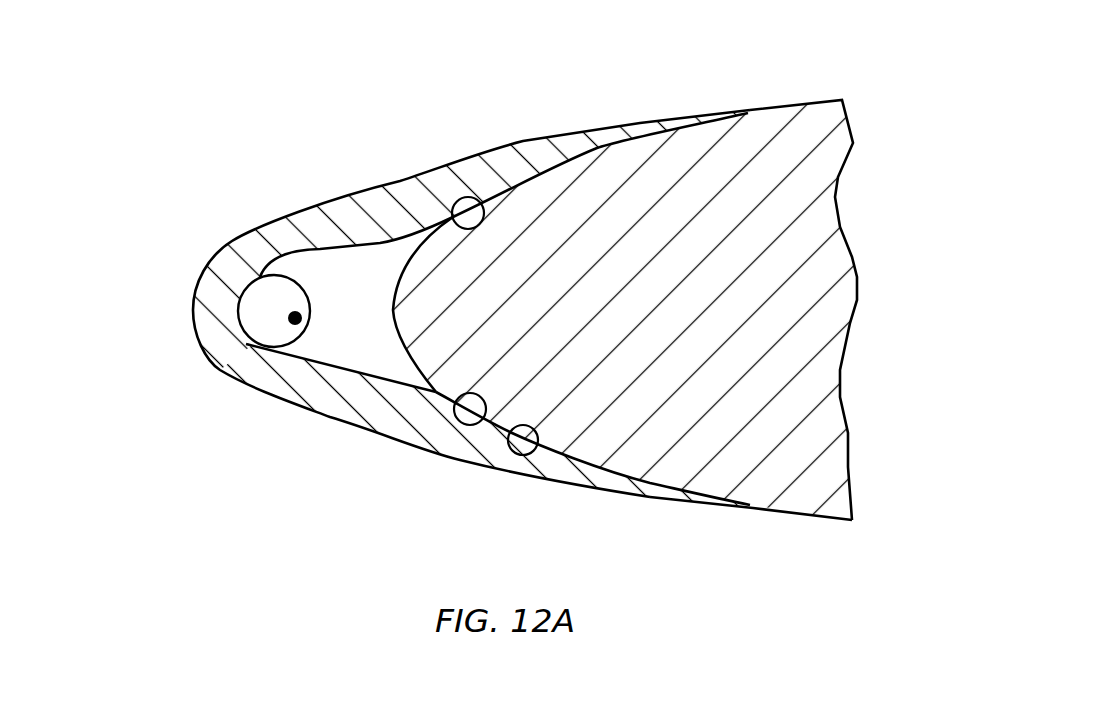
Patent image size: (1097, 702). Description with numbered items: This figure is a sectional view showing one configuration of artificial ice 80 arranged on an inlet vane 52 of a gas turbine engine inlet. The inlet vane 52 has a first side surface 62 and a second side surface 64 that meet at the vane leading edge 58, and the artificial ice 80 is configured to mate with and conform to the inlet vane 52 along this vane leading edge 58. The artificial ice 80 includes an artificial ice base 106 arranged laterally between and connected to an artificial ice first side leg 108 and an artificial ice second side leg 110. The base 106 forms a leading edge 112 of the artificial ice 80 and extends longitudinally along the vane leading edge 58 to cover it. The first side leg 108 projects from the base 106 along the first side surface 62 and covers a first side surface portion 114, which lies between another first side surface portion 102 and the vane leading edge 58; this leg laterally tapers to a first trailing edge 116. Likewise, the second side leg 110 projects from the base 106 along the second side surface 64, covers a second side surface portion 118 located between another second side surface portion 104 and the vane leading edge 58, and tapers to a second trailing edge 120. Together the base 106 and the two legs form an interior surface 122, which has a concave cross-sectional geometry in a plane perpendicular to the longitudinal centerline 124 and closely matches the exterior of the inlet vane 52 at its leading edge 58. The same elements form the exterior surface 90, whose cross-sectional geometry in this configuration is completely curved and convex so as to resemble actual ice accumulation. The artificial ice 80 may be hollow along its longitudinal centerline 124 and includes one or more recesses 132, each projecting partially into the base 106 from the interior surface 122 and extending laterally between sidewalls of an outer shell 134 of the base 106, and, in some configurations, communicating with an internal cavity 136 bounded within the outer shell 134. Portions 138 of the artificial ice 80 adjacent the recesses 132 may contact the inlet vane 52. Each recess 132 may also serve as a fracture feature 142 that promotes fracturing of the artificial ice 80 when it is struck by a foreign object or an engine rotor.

The inlet vane 52 is at (830, 96).
The vane leading edge 58 is at (394, 312).
The first side surface 62 is at (852, 521).
The second side surface 64 is at (790, 106).
The artificial ice 80 is at (187, 262).
The exterior surface 90 is at (274, 227).
The first side surface portion 102 is at (810, 513).
The second side surface portion 104 is at (774, 107).
The artificial ice base 106 is at (212, 380).
The artificial ice first side leg 108 is at (594, 489).
The artificial ice second side leg 110 is at (524, 138).
The leading edge of the artificial ice 112 is at (191, 310).
The first side surface portion 114 is at (555, 482).
The first trailing edge 116 is at (750, 508).
The second side surface portion 118 is at (603, 147).
The second trailing edge 120 is at (752, 112).
The interior surface 122 is at (524, 455).
The longitudinal centerline 124 is at (296, 324).
The recess 132 is at (377, 354).
The outer shell 134 is at (343, 397).
The internal cavity 136 is at (272, 334).
The portions of the artificial ice 138 is at (480, 222).
The fracture feature 142 is at (377, 266).